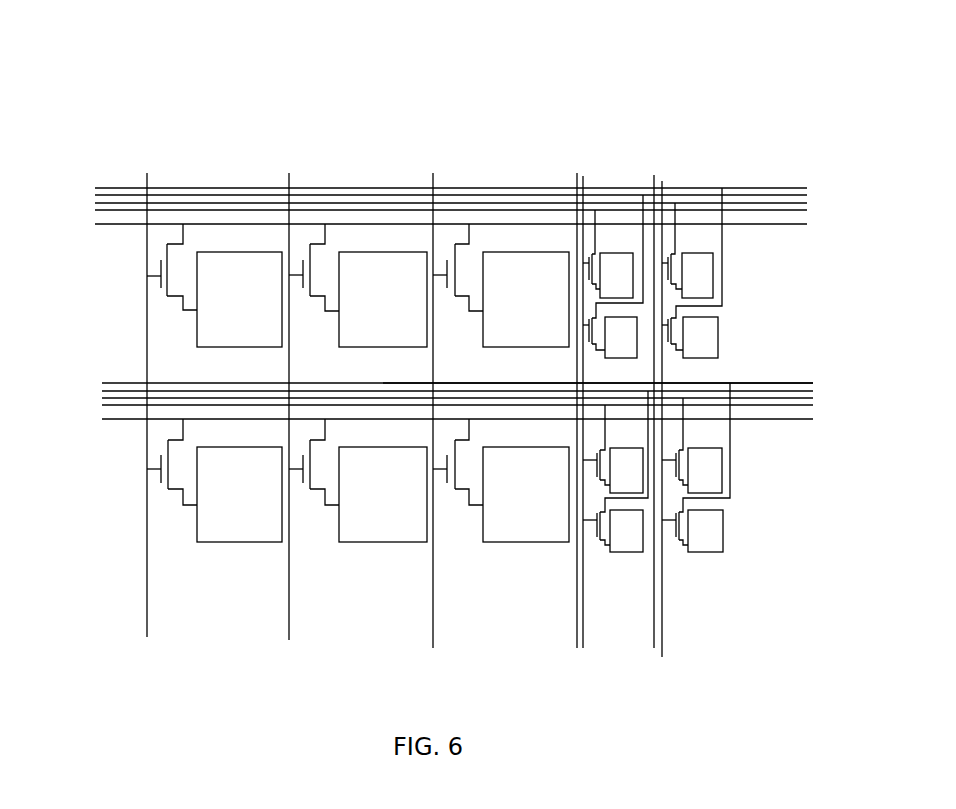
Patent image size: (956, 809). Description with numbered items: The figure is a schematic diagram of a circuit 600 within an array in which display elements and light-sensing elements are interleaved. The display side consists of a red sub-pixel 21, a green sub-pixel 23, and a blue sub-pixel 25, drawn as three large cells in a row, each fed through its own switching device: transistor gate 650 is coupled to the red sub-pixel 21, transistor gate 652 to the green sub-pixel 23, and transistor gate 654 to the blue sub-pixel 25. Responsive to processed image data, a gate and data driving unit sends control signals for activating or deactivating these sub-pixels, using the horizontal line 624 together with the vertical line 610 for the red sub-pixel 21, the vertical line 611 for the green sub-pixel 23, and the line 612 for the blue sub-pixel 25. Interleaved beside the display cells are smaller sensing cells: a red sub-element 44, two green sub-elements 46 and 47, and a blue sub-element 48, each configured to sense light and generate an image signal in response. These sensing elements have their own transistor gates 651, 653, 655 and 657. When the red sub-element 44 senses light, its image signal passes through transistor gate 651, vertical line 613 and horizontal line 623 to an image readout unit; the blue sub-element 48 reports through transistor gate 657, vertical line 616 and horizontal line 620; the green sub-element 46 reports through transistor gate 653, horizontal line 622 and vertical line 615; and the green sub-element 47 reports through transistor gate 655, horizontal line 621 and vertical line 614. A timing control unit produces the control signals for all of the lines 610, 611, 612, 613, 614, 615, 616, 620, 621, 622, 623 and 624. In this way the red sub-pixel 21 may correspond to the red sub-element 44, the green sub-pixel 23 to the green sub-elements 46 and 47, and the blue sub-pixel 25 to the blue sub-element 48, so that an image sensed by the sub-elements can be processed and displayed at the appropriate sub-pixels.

The circuit 600 is at (505, 75).
The vertical line 610 is at (147, 173).
The vertical line 611 is at (289, 173).
The line 612 is at (433, 173).
The vertical line 613 is at (577, 173).
The vertical line 614 is at (583, 176).
The vertical line 615 is at (654, 175).
The vertical line 616 is at (662, 181).
The horizontal line 620 is at (768, 188).
The horizontal line 621 is at (807, 196).
The horizontal line 622 is at (807, 203).
The horizontal line 623 is at (807, 212).
The horizontal line 624 is at (112, 224).
The transistor gate 650 is at (155, 280).
The transistor gate 652 is at (303, 287).
The transistor gate 654 is at (447, 287).
The transistor gate 651 is at (590, 252).
The transistor gate 653 is at (668, 252).
The transistor gate 655 is at (591, 345).
The transistor gate 657 is at (670, 340).
The red sub-pixel 21 is at (228, 336).
The green sub-pixel 23 is at (371, 336).
The blue sub-pixel 25 is at (514, 336).
The red sub-element 44 is at (633, 298).
The green sub-element 46 is at (713, 263).
The green sub-element 47 is at (603, 346).
The blue sub-element 48 is at (718, 331).